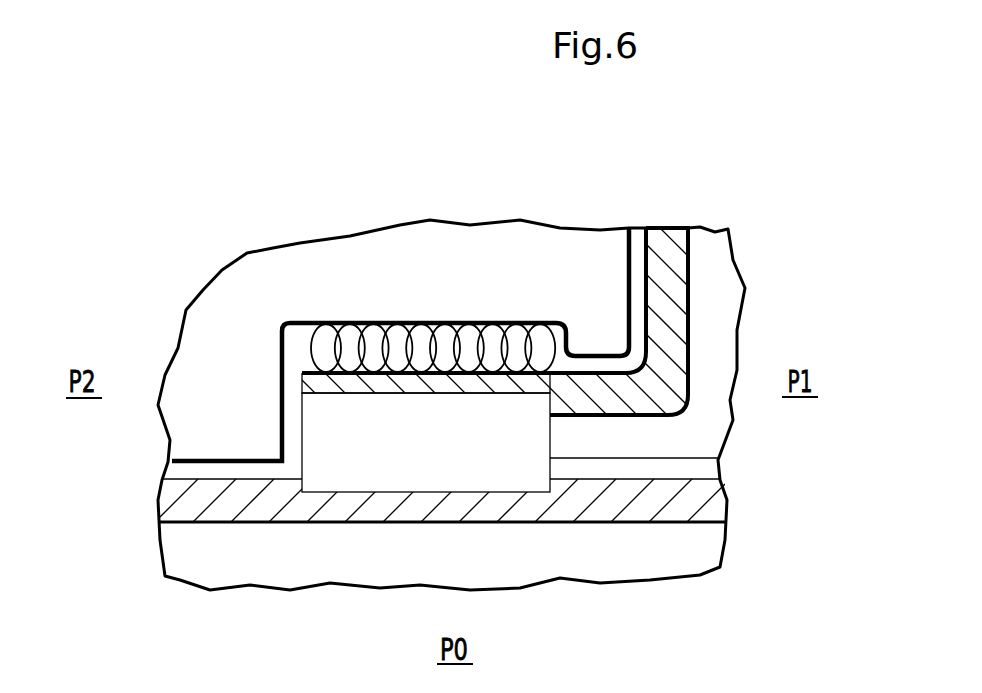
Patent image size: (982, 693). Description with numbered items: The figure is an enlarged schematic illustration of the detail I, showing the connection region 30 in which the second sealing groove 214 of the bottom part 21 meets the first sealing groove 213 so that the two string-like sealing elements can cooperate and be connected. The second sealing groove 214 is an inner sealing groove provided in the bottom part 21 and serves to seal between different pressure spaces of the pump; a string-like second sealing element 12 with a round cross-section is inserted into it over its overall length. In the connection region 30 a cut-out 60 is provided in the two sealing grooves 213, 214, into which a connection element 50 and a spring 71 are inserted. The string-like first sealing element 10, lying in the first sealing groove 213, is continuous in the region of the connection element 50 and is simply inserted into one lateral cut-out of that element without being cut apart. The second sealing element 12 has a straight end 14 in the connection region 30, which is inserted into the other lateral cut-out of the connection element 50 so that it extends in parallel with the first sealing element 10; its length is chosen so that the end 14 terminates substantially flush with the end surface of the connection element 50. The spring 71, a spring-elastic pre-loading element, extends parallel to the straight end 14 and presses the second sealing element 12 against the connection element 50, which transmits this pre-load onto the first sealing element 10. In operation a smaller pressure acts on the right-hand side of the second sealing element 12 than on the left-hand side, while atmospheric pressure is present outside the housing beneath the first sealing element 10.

The first sealing element 10 is at (703, 503).
The second sealing element 12 is at (662, 260).
The straight end 14 is at (320, 382).
The bottom part 21 is at (748, 286).
The connection region 30 is at (292, 309).
The connection element 50 is at (337, 475).
The cut-out 60 is at (293, 432).
The spring 71 is at (417, 347).
The first sealing groove 213 is at (708, 468).
The second sealing groove 214 is at (633, 247).
The detail I is at (150, 180).